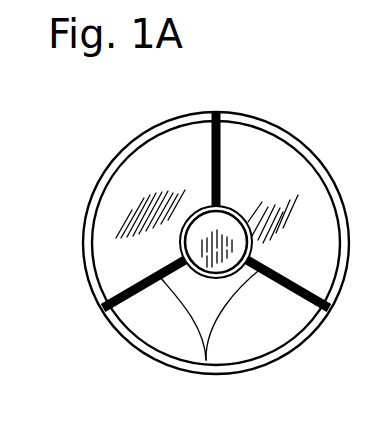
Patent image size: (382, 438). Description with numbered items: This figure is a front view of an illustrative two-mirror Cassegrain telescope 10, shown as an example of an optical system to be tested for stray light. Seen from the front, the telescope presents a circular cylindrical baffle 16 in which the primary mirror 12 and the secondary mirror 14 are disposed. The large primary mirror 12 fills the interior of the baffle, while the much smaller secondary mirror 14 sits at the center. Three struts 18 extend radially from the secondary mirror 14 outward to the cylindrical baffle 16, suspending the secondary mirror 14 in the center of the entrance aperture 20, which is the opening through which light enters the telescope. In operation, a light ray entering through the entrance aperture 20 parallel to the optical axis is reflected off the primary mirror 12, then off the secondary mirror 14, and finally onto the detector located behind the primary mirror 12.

The Cassegrain telescope 10 is at (244, 53).
The primary mirror 12 is at (273, 151).
The secondary mirror 14 is at (201, 237).
The cylindrical baffle 16 is at (82, 240).
The struts 18 is at (220, 151).
The entrance aperture 20 is at (207, 360).